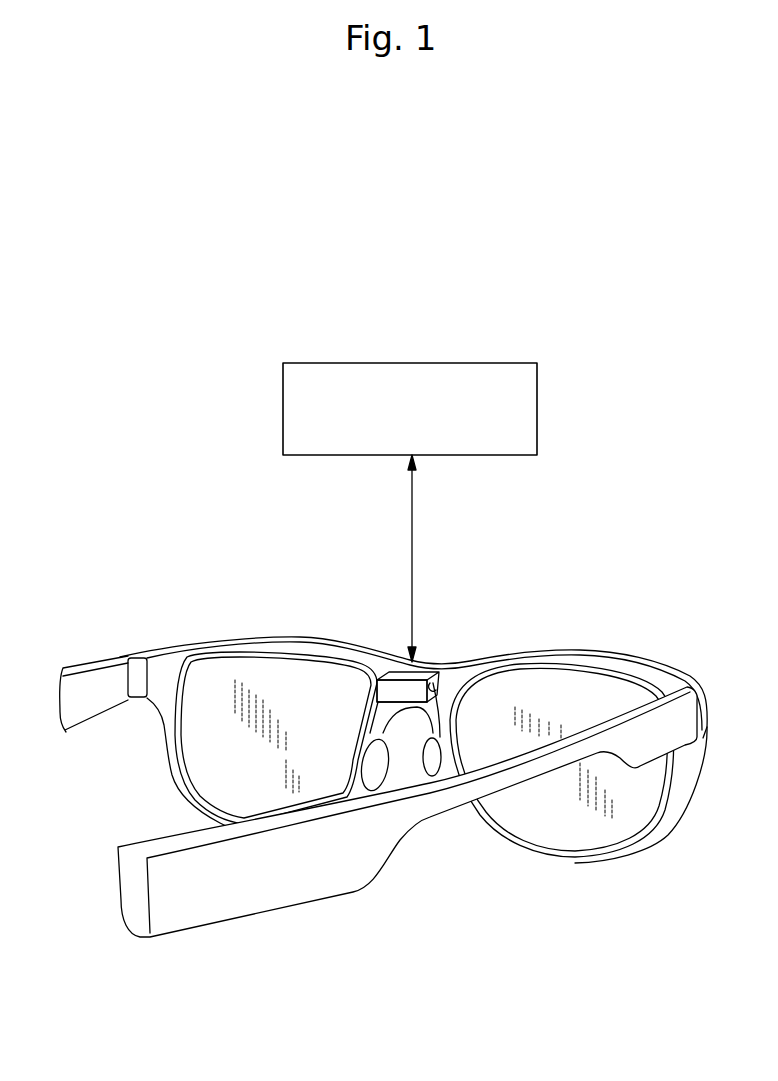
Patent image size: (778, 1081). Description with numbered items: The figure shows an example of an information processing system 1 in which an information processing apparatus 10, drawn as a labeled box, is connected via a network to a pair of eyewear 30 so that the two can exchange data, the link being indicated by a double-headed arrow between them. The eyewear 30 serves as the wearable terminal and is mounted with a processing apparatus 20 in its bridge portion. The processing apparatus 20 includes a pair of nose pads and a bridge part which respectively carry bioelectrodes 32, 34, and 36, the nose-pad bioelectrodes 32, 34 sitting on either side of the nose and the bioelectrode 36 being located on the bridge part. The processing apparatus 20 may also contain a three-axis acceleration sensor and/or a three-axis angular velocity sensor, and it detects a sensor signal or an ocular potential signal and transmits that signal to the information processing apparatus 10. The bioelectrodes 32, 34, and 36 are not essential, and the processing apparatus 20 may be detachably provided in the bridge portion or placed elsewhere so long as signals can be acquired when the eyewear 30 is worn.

The information processing system 1 is at (82, 329).
The information processing apparatus 10 is at (538, 409).
The processing apparatus 20 is at (424, 666).
The eyewear 30 is at (384, 744).
The bioelectrode 32 is at (370, 770).
The bioelectrode 34 is at (440, 762).
The bioelectrode 36 is at (400, 692).